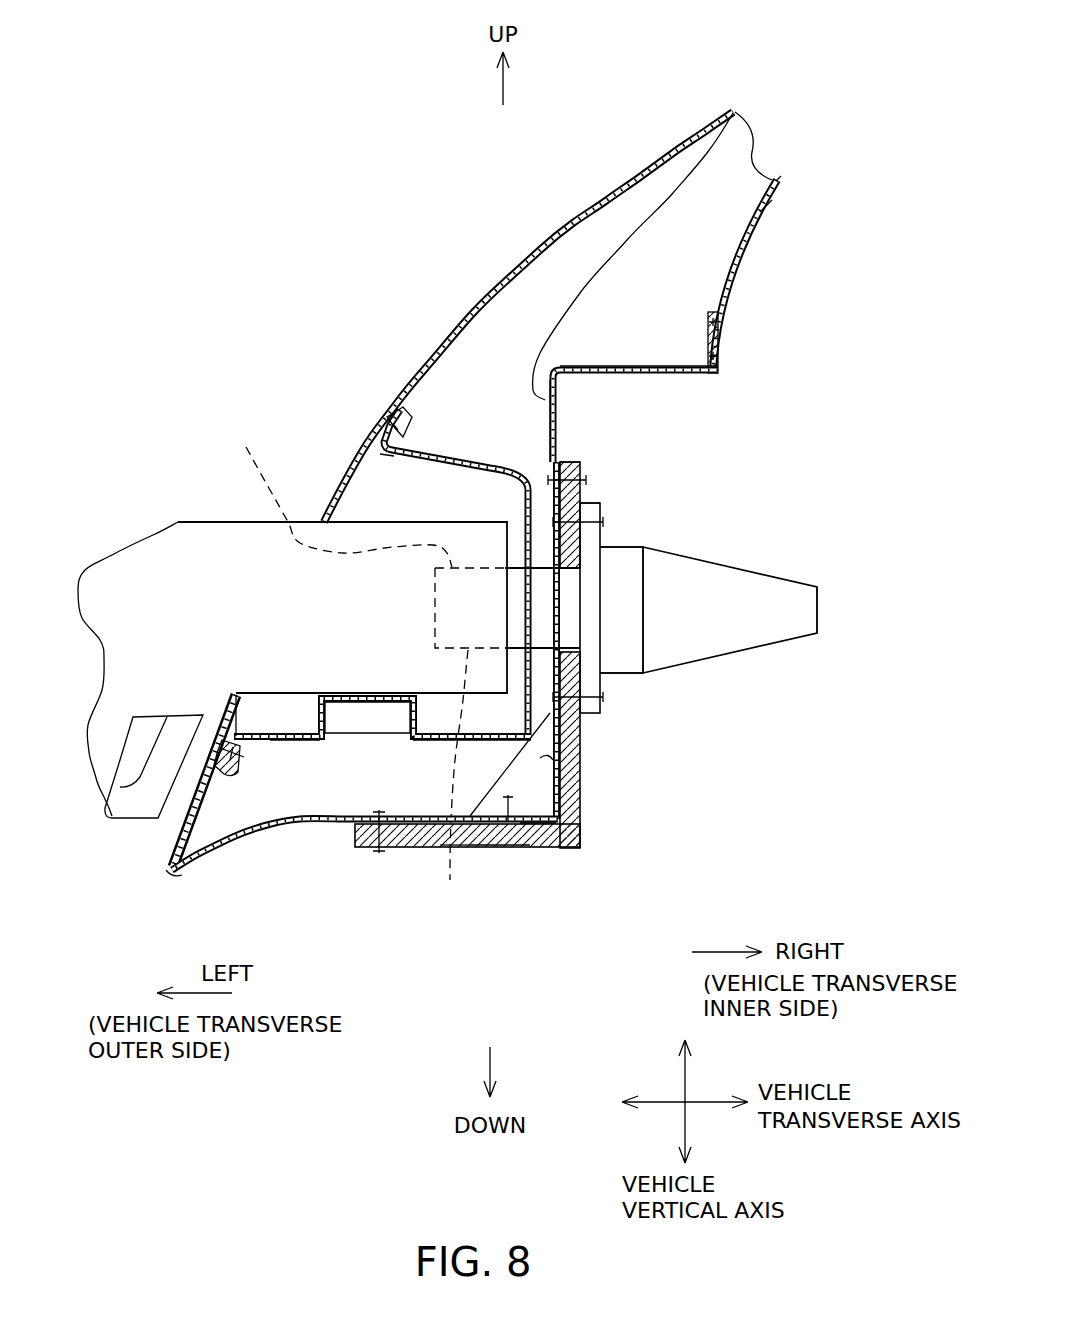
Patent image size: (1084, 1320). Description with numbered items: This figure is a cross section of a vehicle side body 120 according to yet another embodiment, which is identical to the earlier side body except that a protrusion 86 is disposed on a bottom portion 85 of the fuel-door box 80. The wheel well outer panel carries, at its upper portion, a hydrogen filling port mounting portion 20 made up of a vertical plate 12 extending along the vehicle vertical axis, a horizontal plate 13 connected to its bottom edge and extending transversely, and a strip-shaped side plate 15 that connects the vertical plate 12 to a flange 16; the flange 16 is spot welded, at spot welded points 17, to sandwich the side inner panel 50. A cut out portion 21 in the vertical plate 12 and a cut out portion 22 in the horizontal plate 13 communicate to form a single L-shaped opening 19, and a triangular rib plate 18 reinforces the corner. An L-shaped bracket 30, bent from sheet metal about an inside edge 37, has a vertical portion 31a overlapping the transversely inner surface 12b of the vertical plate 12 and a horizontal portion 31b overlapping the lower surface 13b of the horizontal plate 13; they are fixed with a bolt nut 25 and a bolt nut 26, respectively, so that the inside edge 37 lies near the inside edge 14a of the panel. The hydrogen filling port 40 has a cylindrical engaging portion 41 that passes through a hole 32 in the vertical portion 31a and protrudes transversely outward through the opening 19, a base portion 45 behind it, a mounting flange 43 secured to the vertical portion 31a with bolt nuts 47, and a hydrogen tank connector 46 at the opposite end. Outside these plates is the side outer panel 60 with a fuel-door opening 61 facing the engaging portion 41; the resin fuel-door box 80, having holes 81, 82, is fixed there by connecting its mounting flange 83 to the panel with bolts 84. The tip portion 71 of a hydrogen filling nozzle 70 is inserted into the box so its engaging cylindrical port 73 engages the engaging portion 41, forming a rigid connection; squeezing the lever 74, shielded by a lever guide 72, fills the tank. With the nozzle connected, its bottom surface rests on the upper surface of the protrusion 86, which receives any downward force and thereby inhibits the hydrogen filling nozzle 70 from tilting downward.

The side body 120 is at (242, 143).
The side outer panel 60 is at (556, 216).
The fuel-door opening 61 is at (520, 553).
The hydrogen filling nozzle 70 is at (239, 507).
The tip portion 71 is at (390, 523).
The lever guide 72 is at (153, 813).
The engaging cylindrical port 73 is at (365, 651).
The lever 74 is at (106, 802).
The fuel-door box 80 is at (493, 445).
The hole 81 is at (455, 452).
The hole 82 is at (390, 470).
The mounting flange 83 is at (392, 423).
The bolts 84 is at (383, 423).
The bottom portion 85 is at (297, 742).
The protrusion 86 is at (355, 715).
The hydrogen filling port mounting portion 20 is at (760, 196).
The cut out portion 21 is at (596, 346).
The side inner panel 50 is at (765, 230).
The side plate 15 is at (706, 333).
The flange 16 is at (716, 333).
The spot welded points 17 is at (720, 323).
The vertical plate 12 is at (563, 395).
The transversely inner surface 12b is at (563, 433).
The horizontal plate 13 is at (440, 850).
The lower surface 13b is at (345, 822).
The inside edge 14a is at (572, 850).
The inside edge 37 is at (585, 833).
The rib plate 18 is at (543, 852).
The opening 19 is at (548, 762).
The cut out portion 22 is at (503, 850).
The bolt nut 26 is at (379, 855).
The engaging portion 41 is at (475, 815).
The L-shaped bracket 30 is at (602, 460).
The vertical portion 31a is at (582, 744).
The horizontal portion 31b is at (490, 855).
The hole 32 is at (575, 628).
The bolt nut 25 is at (563, 461).
The mounting flange 43 is at (600, 491).
The bolt nuts 47 is at (600, 524).
The base portion 45 is at (625, 561).
The hydrogen filling port 40 is at (771, 549).
The hydrogen tank connector 46 is at (783, 597).